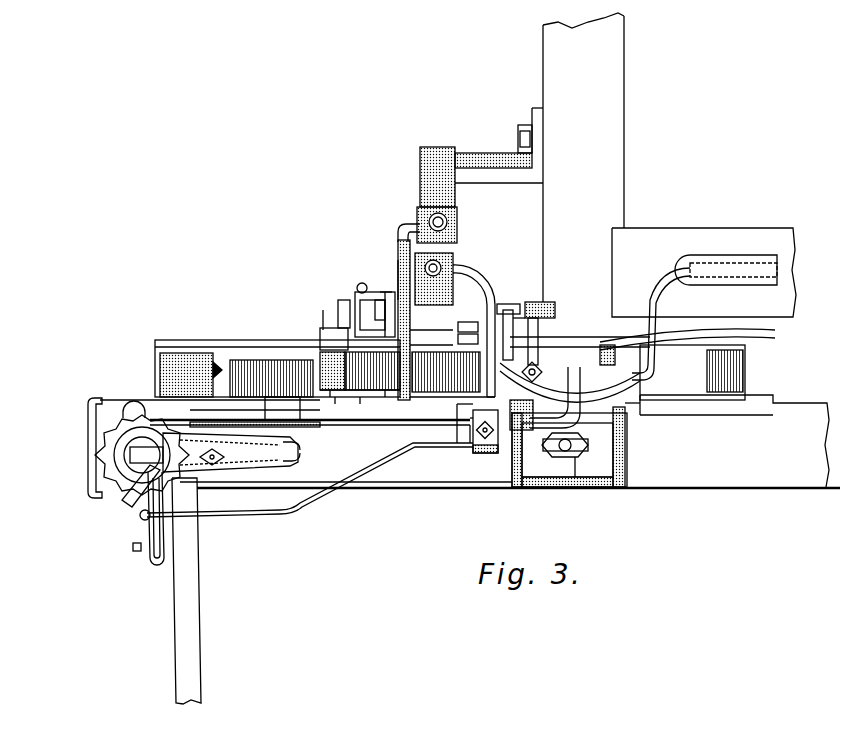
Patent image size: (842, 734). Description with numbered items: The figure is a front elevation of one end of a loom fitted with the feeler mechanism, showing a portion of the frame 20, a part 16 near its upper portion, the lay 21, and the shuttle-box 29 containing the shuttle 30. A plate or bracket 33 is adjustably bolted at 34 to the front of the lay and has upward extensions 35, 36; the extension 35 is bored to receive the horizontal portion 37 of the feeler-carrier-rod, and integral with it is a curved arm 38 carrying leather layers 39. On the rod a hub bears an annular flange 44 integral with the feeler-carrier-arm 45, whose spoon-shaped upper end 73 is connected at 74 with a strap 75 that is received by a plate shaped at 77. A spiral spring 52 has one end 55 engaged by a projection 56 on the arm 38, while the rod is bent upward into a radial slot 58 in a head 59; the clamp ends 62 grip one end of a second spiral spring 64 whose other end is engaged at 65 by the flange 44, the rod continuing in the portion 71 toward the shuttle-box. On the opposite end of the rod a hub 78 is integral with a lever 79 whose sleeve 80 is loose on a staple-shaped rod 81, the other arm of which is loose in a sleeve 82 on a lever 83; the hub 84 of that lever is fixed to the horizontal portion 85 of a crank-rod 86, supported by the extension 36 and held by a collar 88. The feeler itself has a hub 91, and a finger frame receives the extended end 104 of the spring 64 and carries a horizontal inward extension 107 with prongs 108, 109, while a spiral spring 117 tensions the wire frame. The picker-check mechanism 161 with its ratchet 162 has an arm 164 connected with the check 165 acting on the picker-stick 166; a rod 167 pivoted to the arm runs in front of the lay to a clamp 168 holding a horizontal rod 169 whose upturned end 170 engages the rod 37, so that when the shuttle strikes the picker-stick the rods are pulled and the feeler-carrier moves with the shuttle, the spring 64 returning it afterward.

The nut 16 is at (530, 116).
The frame 20 is at (626, 128).
The lay 21 is at (760, 405).
The shuttle-box 29 is at (238, 356).
The shuttle 30 is at (213, 368).
The plate or bracket 33 is at (545, 472).
The bolt 34 is at (575, 478).
The upward extension 35 is at (468, 412).
The upward extension 36 is at (632, 377).
The horizontal portion of feeler-carrier-rod 37 is at (510, 420).
The curved arm 38 is at (490, 290).
The leather layers 39 is at (455, 254).
The annular flange 44 is at (402, 400).
The feeler-carrier-arm or lifting-arm 45 is at (392, 292).
The spiral spring 52 is at (450, 392).
The spring end 55 is at (476, 326).
The projection 56 is at (476, 340).
The radial slot 58 is at (322, 372).
The head 59 is at (333, 392).
The clamp ends or inturned lips 62 is at (330, 352).
The spiral spring 64 is at (352, 330).
The spring end engagement 65 is at (385, 392).
The portion of feeler-carrier-rod 71 is at (340, 345).
The spoon-shaped upper end 73 is at (458, 222).
The connection 74 is at (404, 228).
The strap 75 is at (457, 197).
The shaped portion of slotted plate 77 is at (500, 170).
The hub 78 is at (540, 378).
The lever 79 is at (540, 331).
The sleeve 80 is at (556, 312).
The staple-shaped rod 81 is at (516, 308).
The sleeve 82 is at (508, 304).
The lever 83 is at (545, 302).
The hub 84 is at (586, 340).
The horizontal portion of crank-rod 85 is at (591, 398).
The crank-rod 86 is at (657, 326).
The collar 88 is at (606, 345).
The hub 91 is at (383, 306).
The extended end of spring 104 is at (360, 284).
The horizontal inward extension 107 is at (322, 338).
The prong 108 is at (340, 400).
The prong 109 is at (365, 400).
The spiral spring 117 is at (398, 290).
The picker-check mechanism 161 is at (195, 472).
The ratchet 162 is at (108, 432).
The arm 164 is at (135, 508).
The check 165 is at (155, 566).
The picker-stick 166 is at (199, 572).
The rod 167 is at (304, 496).
The clamp 168 is at (480, 455).
The horizontal rod 169 is at (472, 420).
The upturned end 170 is at (580, 395).